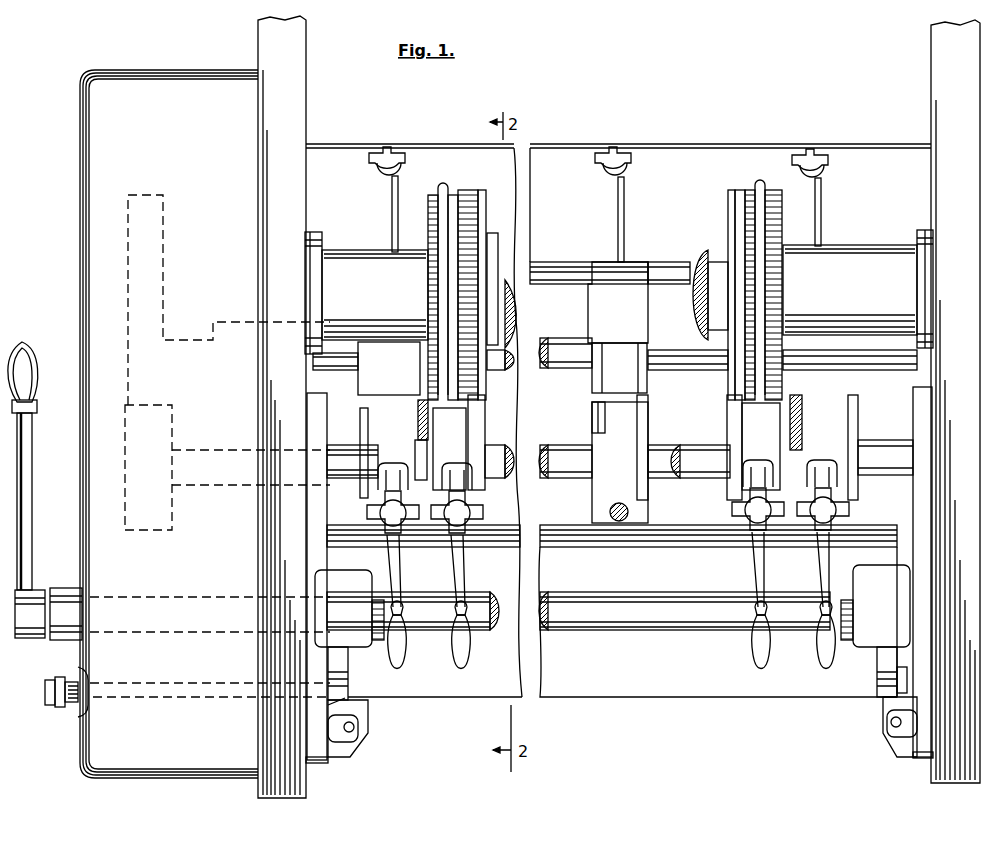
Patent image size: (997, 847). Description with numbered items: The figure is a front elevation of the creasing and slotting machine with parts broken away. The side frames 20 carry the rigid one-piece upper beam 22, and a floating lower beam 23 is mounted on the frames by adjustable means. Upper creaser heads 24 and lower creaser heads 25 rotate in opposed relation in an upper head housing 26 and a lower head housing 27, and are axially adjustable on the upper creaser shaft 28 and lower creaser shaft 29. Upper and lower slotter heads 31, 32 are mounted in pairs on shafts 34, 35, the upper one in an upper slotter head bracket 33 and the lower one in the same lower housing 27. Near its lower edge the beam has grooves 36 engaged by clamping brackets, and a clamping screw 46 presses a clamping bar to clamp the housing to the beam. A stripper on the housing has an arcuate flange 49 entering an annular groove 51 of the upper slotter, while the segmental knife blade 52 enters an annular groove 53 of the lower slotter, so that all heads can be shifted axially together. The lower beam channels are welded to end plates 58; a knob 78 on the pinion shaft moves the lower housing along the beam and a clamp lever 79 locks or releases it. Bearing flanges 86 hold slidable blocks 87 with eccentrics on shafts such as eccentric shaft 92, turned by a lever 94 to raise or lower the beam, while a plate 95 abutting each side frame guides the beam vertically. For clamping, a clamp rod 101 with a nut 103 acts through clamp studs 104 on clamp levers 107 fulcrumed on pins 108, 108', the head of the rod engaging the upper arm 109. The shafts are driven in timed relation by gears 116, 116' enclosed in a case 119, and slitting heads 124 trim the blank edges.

The side frame 20 is at (262, 38).
The upper beam 22 is at (722, 147).
The floating lower beam 23 is at (670, 692).
The upper creaser head 24 is at (597, 386).
The lower creaser head 25 is at (593, 411).
The upper head housing 26 is at (600, 318).
The lower head housing 27 is at (455, 442).
The upper creaser shaft 28 is at (660, 372).
The lower creaser shaft 29 is at (664, 447).
The upper slotter head 31 is at (482, 208).
The lower slotter head 32 is at (484, 420).
The upper slotter head bracket 33 is at (468, 190).
The upper slotter shaft 34 is at (372, 256).
The lower slotter shaft 35 is at (696, 482).
The groove 36 is at (570, 262).
The clamping screw 46 is at (390, 188).
The flange 49 is at (435, 386).
The annular groove 51 is at (440, 218).
The segmental knife blade 52 is at (486, 400).
The annular groove 53 is at (480, 488).
The end plate 58 is at (336, 538).
The knob 78 is at (752, 516).
The clamp lever 79 is at (762, 562).
The bearing flange 86 is at (868, 572).
The slidable block 87 is at (882, 650).
The eccentric shaft 92 is at (626, 610).
The lever 94 is at (28, 452).
The plate 95 is at (314, 762).
The clamp rod 101 is at (170, 698).
The nut 103 is at (55, 708).
The clamp stud 104 is at (356, 727).
The clamp lever 107 is at (353, 753).
The pin 108 is at (869, 733).
The pin 108' is at (374, 733).
The upper arm 109 is at (340, 710).
The gear 116 is at (227, 490).
The gear 116' is at (229, 298).
The case 119 is at (98, 136).
The slitting head 124 is at (414, 402).